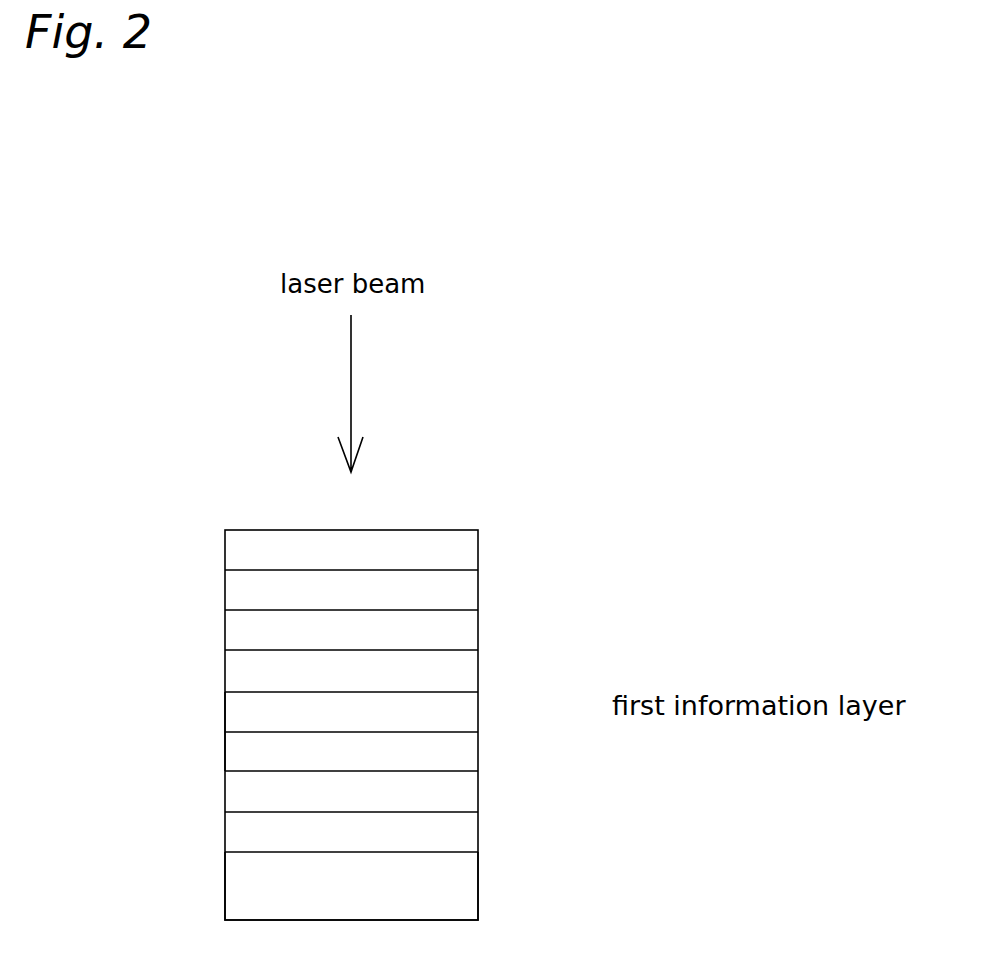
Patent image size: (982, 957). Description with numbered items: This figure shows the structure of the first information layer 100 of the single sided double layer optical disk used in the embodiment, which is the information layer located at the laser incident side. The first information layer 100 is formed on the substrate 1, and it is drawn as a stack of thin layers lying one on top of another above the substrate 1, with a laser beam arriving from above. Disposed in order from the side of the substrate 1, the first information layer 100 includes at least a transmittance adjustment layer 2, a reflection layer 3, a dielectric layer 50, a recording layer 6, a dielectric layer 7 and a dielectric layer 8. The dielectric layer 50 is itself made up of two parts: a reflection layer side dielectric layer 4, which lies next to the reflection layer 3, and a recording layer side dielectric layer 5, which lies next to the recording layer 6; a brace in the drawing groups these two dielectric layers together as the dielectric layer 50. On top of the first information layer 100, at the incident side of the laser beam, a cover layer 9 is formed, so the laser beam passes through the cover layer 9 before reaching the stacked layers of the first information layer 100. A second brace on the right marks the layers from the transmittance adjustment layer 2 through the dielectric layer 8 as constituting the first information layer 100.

The substrate 1 is at (242, 885).
The transmittance adjustment layer 2 is at (233, 828).
The reflection layer 3 is at (233, 788).
The reflection layer side dielectric layer 4 is at (233, 748).
The recording layer side dielectric layer 5 is at (233, 708).
The recording layer 6 is at (233, 668).
The dielectric layer 7 is at (233, 628).
The dielectric layer 8 is at (233, 588).
The cover layer 9 is at (233, 548).
The dielectric layer 50 is at (142, 698).
The first information layer 100 is at (490, 572).